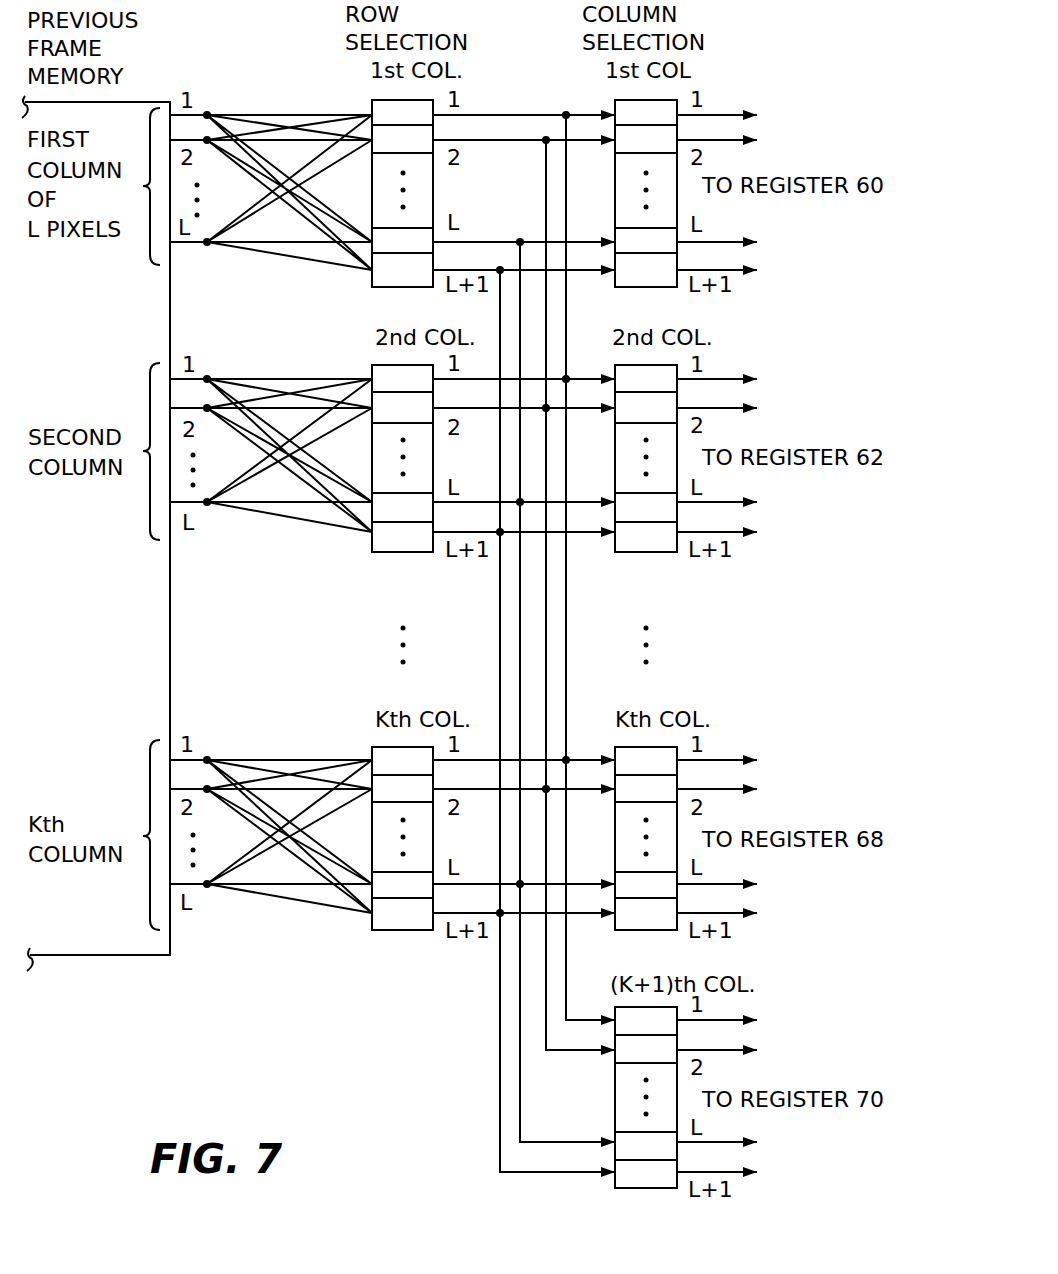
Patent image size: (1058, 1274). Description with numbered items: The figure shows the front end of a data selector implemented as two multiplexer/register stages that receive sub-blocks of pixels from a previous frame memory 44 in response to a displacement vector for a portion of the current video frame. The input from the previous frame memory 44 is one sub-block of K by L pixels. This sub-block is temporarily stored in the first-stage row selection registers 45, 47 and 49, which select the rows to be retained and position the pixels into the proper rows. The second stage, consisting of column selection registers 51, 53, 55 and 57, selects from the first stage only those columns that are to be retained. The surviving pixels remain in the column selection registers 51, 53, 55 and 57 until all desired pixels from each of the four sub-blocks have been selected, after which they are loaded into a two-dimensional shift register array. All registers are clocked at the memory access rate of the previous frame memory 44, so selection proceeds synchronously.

The previous frame memory 44 is at (170, 620).
The row selection register 45 is at (372, 290).
The row selection register 47 is at (372, 555).
The row selection register 49 is at (372, 933).
The column selection register 51 is at (672, 290).
The column selection register 53 is at (668, 555).
The column selection register 55 is at (672, 933).
The column selection register 57 is at (660, 1190).